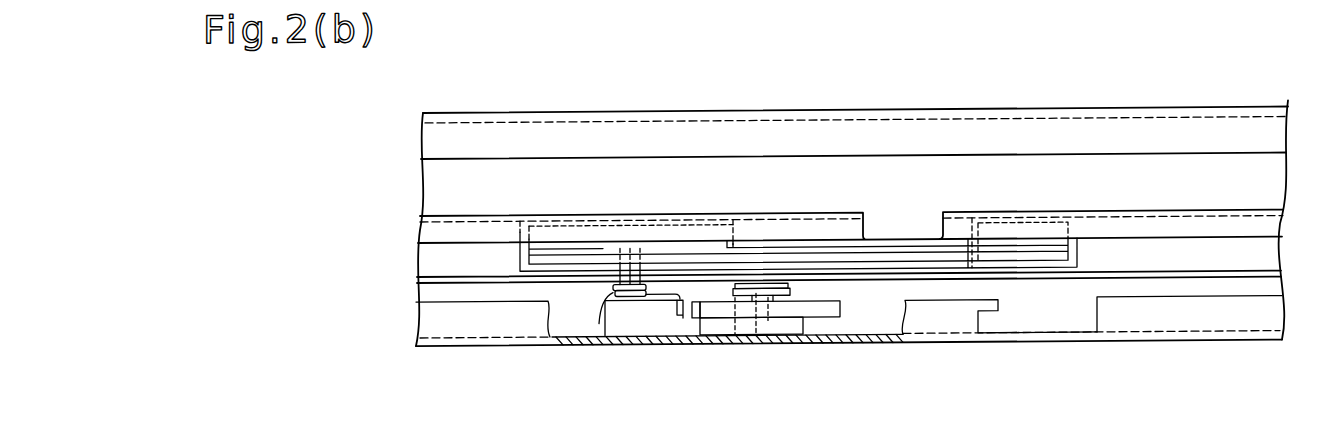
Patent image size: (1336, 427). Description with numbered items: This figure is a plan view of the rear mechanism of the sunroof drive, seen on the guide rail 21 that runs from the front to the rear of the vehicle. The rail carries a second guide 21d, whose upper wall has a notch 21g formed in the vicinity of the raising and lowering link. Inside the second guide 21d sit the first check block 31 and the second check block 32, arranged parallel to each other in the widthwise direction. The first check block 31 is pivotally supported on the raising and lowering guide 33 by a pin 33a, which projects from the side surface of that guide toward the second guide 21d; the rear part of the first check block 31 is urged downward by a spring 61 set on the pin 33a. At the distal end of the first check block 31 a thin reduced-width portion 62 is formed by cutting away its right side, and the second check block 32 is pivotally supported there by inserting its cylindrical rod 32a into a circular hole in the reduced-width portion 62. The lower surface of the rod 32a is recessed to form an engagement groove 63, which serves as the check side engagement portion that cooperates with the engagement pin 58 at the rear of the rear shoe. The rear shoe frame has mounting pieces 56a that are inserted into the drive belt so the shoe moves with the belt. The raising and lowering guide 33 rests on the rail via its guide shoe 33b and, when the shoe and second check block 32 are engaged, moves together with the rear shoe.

The guide rail 21 is at (1205, 346).
The second guide 21d is at (534, 325).
The notch 21g is at (1004, 310).
The first check block 31 is at (681, 322).
The second check block 32 is at (842, 310).
The rod 32a is at (756, 337).
The raising and lowering guide 33 is at (1080, 256).
The pin 33a is at (640, 318).
The guide shoe 33b is at (600, 222).
The mounting piece 56a is at (797, 289).
The engagement pin 58 is at (735, 337).
The spring 61 is at (600, 325).
The reduced-width portion 62 is at (789, 330).
The engagement groove 63 is at (768, 323).